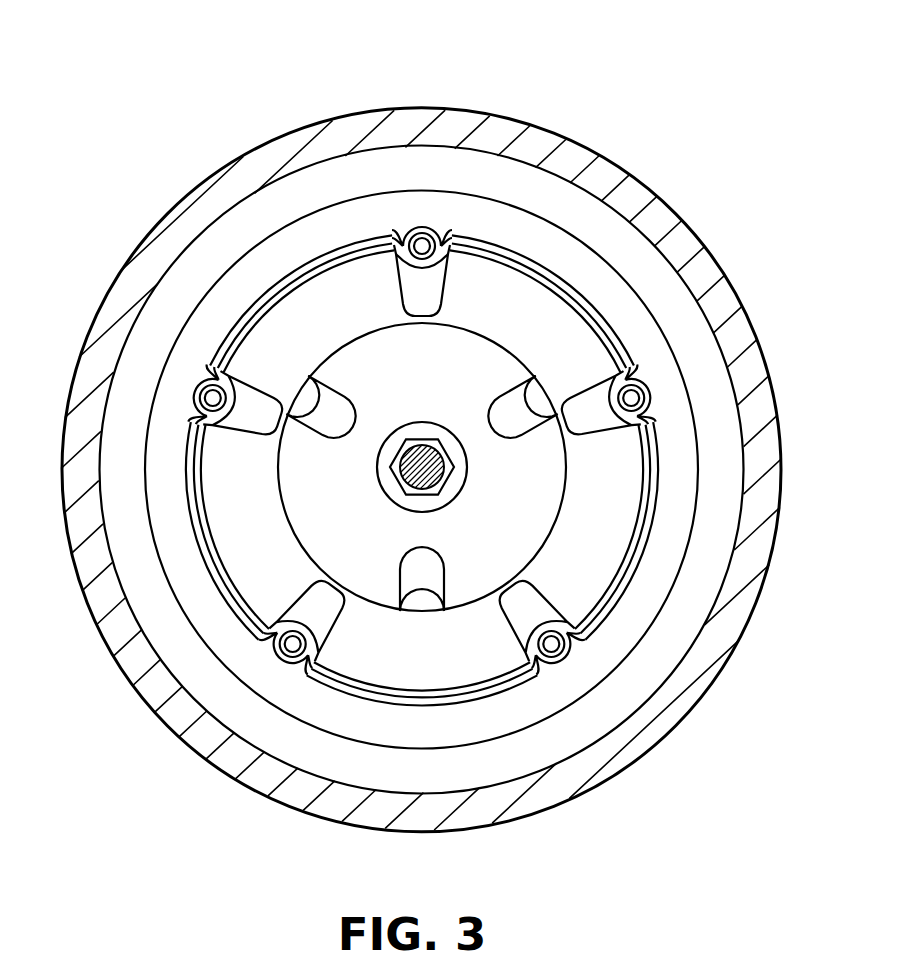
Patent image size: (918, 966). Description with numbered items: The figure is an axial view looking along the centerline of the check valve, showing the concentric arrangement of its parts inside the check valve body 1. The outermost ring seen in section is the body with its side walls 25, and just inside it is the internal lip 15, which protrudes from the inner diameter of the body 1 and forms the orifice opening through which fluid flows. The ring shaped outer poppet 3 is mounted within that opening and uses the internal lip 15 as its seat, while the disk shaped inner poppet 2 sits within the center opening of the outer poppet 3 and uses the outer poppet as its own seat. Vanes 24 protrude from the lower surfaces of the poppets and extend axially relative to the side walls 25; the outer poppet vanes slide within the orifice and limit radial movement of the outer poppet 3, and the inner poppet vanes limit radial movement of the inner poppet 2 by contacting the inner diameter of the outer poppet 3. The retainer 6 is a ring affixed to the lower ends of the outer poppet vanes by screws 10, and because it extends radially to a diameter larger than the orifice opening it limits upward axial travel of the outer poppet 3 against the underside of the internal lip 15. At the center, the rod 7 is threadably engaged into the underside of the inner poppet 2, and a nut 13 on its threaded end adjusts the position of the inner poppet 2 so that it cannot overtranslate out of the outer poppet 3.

The check valve body 1 is at (570, 69).
The inner poppet 2 is at (485, 353).
The outer poppet 3 is at (302, 343).
The retainer 6 is at (637, 324).
The rod 7 is at (397, 493).
The screw 10 is at (409, 233).
The nut 13 is at (412, 438).
The internal lip 15 is at (263, 207).
The vanes 24 is at (597, 426).
The side walls 25 is at (635, 203).